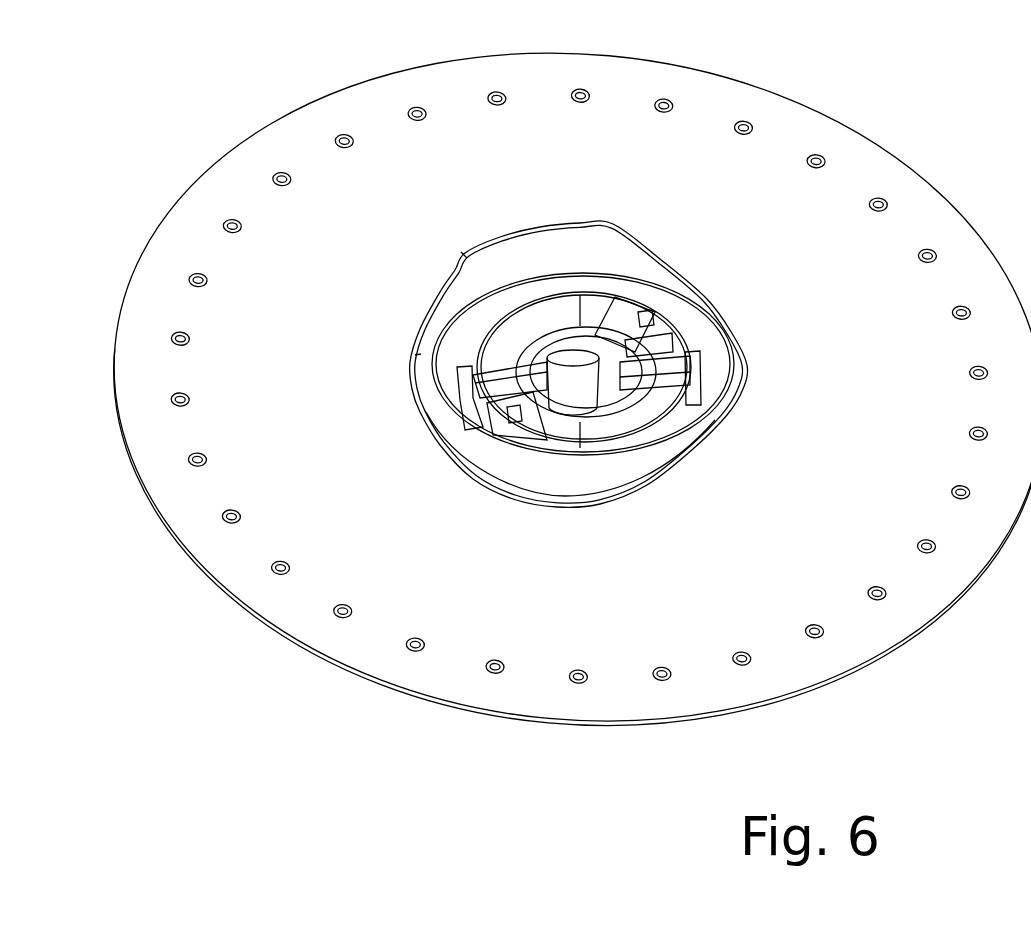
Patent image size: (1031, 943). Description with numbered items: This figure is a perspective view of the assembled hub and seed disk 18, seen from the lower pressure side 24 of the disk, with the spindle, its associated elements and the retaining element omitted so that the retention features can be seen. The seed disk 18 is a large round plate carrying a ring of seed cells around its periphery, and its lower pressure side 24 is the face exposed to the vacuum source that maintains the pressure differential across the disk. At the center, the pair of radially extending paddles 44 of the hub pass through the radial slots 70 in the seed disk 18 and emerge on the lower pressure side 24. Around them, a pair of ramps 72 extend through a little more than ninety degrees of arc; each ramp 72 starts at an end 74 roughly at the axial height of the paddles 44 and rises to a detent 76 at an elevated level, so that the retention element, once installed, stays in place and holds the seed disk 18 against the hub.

The seed disk 18 is at (718, 163).
The lower pressure side 24 is at (812, 282).
The paddles 44 is at (680, 370).
The radial slots 70 is at (667, 345).
The ramps 72 is at (560, 313).
The end 74 is at (693, 400).
The detents 76 is at (620, 318).